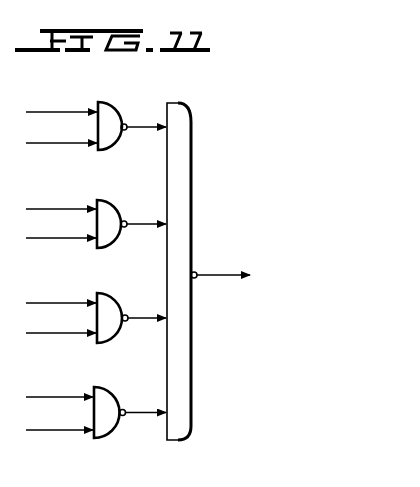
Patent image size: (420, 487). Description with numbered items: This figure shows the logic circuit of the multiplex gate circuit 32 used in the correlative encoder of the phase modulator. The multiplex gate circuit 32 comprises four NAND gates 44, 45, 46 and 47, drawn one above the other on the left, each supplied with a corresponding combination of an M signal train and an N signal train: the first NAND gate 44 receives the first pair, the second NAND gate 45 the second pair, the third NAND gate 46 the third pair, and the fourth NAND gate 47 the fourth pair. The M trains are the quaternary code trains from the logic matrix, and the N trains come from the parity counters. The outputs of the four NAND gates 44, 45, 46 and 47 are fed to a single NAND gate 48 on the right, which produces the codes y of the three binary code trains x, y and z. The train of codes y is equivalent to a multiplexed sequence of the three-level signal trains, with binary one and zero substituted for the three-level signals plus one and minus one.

The multiplex gate circuit 32 is at (180, 95).
The NAND gate 44 is at (127, 88).
The NAND gate 45 is at (135, 190).
The NAND gate 46 is at (131, 291).
The NAND gate 47 is at (131, 386).
The single NAND gate 48 is at (196, 189).